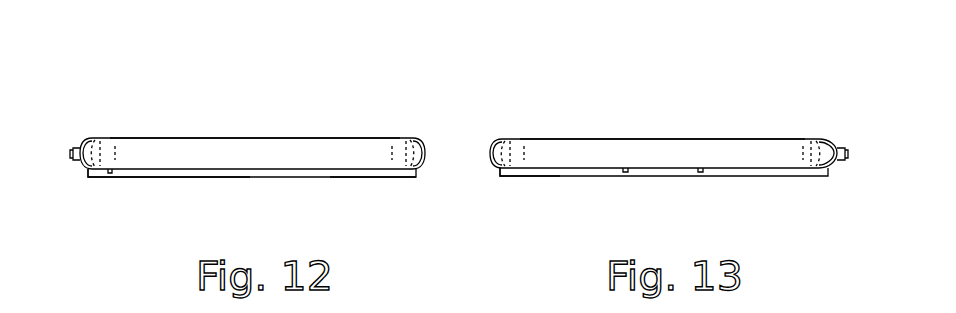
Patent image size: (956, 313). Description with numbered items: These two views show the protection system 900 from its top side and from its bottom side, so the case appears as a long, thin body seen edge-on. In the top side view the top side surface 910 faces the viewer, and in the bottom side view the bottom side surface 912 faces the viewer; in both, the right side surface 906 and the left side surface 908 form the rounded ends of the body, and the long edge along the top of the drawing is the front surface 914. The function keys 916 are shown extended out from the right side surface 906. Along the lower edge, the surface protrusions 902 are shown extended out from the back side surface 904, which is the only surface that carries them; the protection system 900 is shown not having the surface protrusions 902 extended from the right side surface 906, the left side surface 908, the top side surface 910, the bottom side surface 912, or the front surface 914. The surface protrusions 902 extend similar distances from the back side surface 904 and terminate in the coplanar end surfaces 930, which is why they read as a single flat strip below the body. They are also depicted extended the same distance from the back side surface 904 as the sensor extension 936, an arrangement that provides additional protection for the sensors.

In FIG. 12, the protection system 900 is at (120, 72).
In FIG. 13, the protection system 900 is at (829, 62).
In FIG. 12, the surface protrusions 902 is at (322, 170).
In FIG. 13, the surface protrusions 902 is at (605, 177).
In FIG. 12, the back side surface 904 is at (108, 174).
In FIG. 13, the back side surface 904 is at (530, 172).
In FIG. 12, the right side surface 906 is at (81, 147).
In FIG. 13, the right side surface 906 is at (833, 163).
In FIG. 12, the left side surface 908 is at (427, 156).
In FIG. 13, the left side surface 908 is at (491, 148).
In FIG. 12, the top side surface 910 is at (328, 150).
In FIG. 13, the bottom side surface 912 is at (570, 160).
In FIG. 12, the front surface 914 is at (226, 138).
In FIG. 13, the front surface 914 is at (668, 139).
In FIG. 12, the function keys 916 is at (72, 159).
In FIG. 13, the function keys 916 is at (846, 152).
In FIG. 12, the coplanar end surfaces 930 is at (368, 178).
In FIG. 12, the sensor extension 936 is at (160, 178).